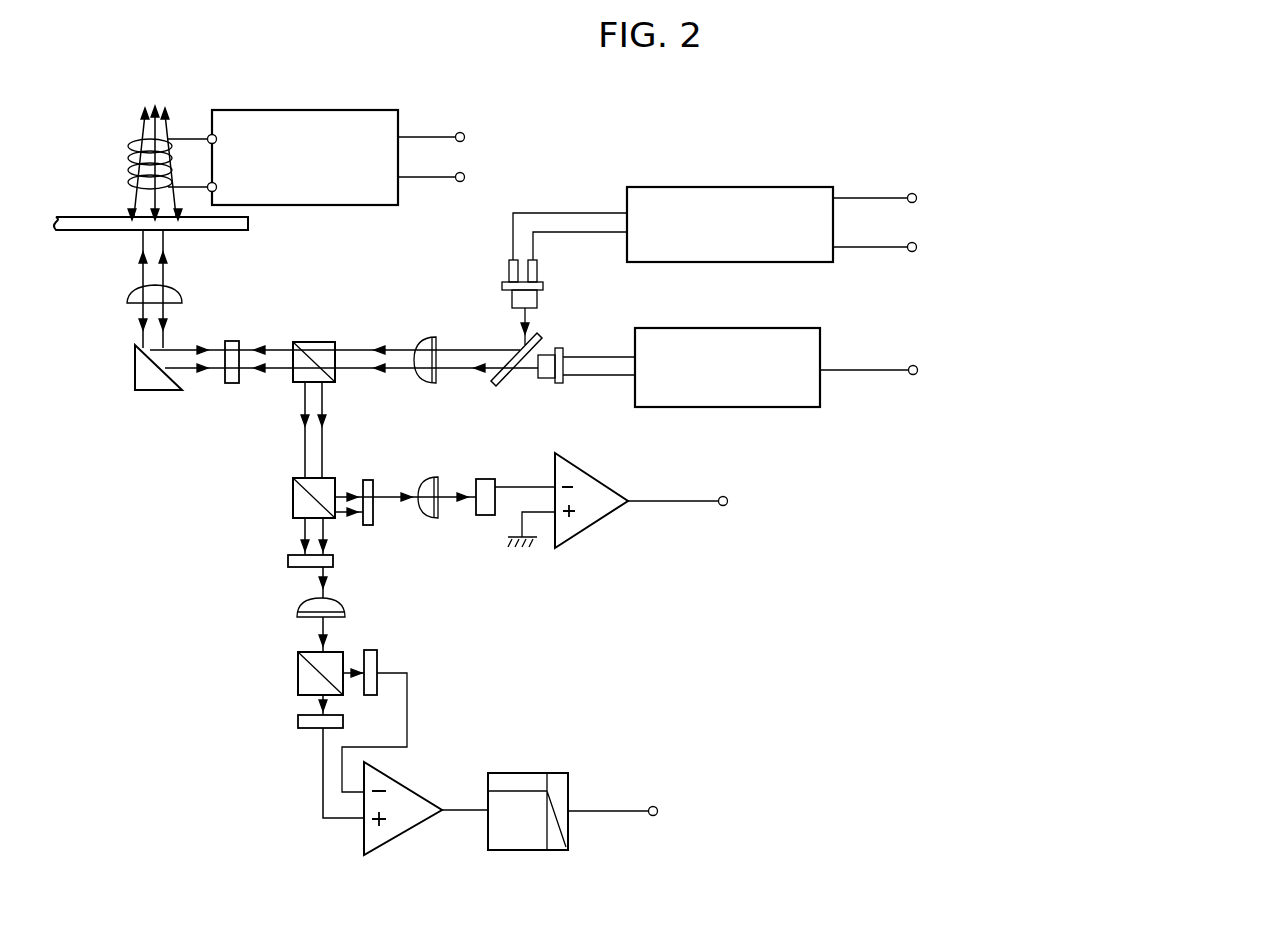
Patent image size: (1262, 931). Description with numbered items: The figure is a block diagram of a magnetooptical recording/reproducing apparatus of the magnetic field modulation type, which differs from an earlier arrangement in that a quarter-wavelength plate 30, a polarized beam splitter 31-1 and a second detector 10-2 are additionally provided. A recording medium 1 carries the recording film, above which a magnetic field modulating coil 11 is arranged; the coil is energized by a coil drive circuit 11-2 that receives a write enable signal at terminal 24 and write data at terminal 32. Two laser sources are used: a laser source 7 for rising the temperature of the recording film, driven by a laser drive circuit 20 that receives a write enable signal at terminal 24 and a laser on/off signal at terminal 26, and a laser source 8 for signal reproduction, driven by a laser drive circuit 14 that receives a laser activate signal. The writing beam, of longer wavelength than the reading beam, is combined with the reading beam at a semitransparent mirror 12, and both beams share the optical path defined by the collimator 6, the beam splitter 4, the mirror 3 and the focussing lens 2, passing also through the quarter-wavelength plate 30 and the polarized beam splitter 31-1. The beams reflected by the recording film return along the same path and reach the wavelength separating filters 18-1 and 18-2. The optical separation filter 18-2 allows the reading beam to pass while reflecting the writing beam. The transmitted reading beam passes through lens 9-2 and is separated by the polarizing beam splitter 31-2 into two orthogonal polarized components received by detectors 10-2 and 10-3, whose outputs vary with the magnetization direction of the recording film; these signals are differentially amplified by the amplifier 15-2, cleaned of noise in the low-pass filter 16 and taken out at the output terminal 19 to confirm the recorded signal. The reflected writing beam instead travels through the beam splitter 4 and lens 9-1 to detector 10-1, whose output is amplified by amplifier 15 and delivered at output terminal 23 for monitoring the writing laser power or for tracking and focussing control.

The recording medium 1 is at (74, 224).
The focussing lens 2 is at (175, 292).
The mirror 3 is at (134, 372).
The beam splitter 4 is at (292, 504).
The collimator 6 is at (428, 384).
The laser source for rising temperature of a recording film 7 is at (544, 286).
The laser source for signal reproduction 8 is at (560, 384).
The lens 9-1 is at (437, 519).
The lens 9-2 is at (297, 610).
The detector 10-1 is at (484, 478).
The second detector 10-2 is at (378, 656).
The detector 10-3 is at (298, 722).
The magnetic field modulating coil 11 is at (128, 148).
The coil drive circuit 11-2 is at (310, 110).
The semitransparent mirror 12 is at (539, 336).
The laser drive circuit 14 is at (738, 328).
The amplifier 15 is at (588, 524).
The amplifier 15-2 is at (402, 840).
The low-pass filter 16 is at (524, 851).
The wavelength separating filter 18-1 is at (394, 466).
The wavelength separating filter 18-2 is at (288, 562).
The output terminal 19 is at (656, 806).
The laser drive circuit 20 is at (738, 186).
The output terminal 23 is at (726, 496).
The write enable signal terminal 24 is at (462, 133).
The laser on/off terminal 26 is at (915, 252).
The quarter-wavelength plate 30 is at (232, 384).
The polarized beam splitter 31-1 is at (312, 341).
The polarizing beam splitter 31-2 is at (298, 675).
The write data terminal 32 is at (462, 181).